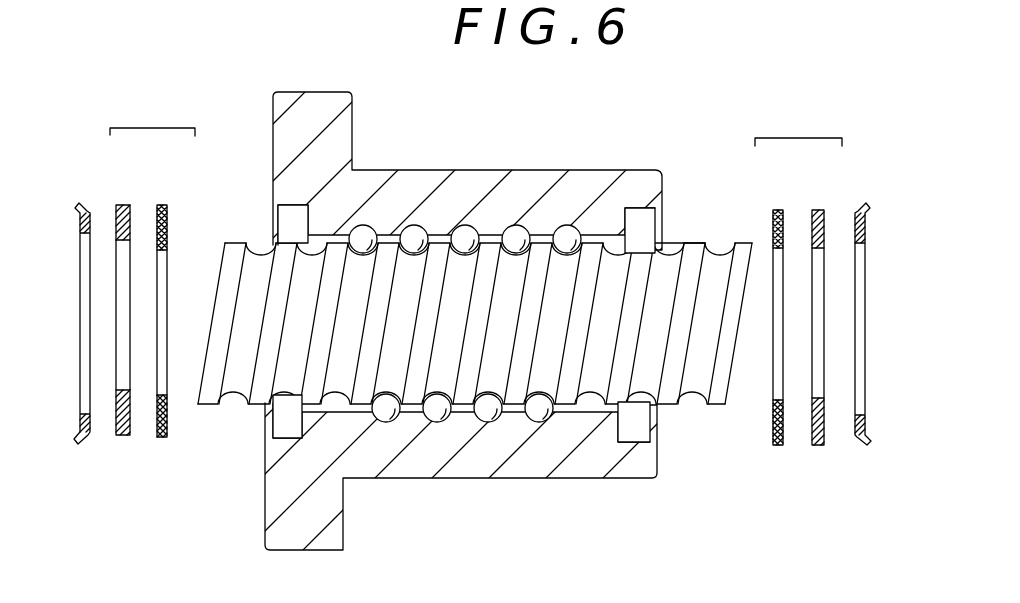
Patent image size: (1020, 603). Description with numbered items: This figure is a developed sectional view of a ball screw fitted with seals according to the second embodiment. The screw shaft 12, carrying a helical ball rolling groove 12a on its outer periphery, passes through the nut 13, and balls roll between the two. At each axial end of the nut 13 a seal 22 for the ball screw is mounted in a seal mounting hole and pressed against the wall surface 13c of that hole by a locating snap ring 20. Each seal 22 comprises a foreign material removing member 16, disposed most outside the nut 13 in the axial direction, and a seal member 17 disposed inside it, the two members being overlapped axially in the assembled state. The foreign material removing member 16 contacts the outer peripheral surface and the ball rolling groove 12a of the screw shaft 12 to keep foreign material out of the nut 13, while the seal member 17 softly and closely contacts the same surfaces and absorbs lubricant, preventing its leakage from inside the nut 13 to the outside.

The screw shaft 12 is at (722, 255).
The ball rolling groove 12a is at (668, 257).
The nut 13 is at (523, 180).
The wall surface 13c is at (656, 227).
The foreign material removing member 16 is at (124, 203).
The seal member 17 is at (166, 203).
The locating snap ring 20 is at (86, 203).
The seal for the ball screw 22 is at (476, 122).